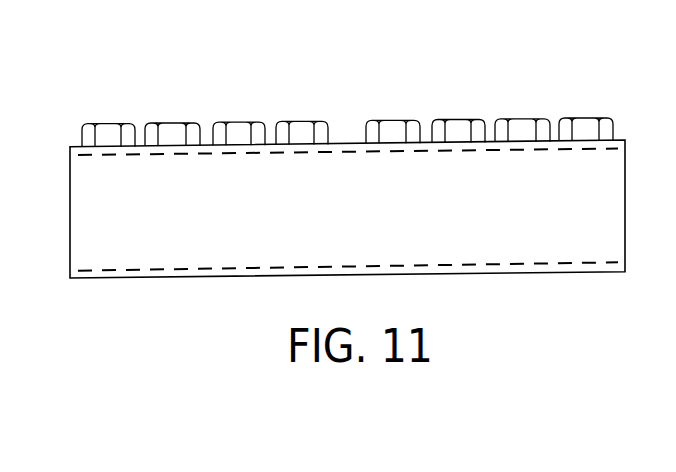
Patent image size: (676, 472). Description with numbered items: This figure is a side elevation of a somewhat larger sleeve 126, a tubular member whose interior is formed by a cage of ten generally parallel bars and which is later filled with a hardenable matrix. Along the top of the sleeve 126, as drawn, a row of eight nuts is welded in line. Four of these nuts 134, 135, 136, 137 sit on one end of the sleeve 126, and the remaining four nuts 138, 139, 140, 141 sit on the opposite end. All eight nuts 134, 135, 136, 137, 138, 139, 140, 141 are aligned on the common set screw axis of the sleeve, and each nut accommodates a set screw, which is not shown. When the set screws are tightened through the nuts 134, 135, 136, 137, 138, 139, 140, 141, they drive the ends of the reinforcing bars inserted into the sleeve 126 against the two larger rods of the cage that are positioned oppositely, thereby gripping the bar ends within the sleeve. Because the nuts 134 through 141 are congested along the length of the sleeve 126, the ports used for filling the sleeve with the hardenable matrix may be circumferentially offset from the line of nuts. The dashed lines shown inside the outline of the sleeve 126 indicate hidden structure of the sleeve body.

The sleeve 126 is at (86, 204).
The nut 134 is at (128, 125).
The nut 135 is at (180, 123).
The nut 136 is at (253, 122).
The nut 137 is at (322, 120).
The nut 138 is at (407, 120).
The nut 139 is at (473, 118).
The nut 140 is at (528, 120).
The nut 141 is at (605, 118).